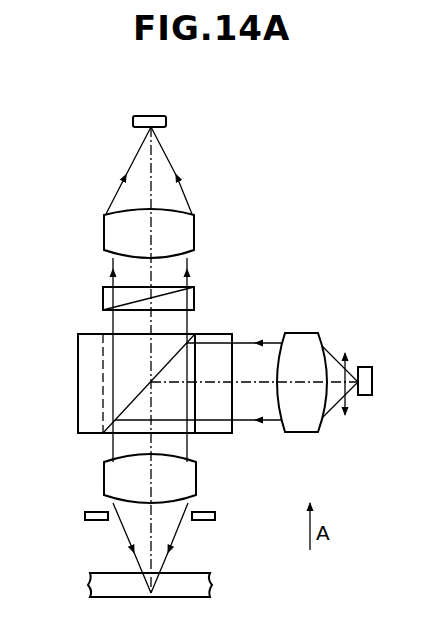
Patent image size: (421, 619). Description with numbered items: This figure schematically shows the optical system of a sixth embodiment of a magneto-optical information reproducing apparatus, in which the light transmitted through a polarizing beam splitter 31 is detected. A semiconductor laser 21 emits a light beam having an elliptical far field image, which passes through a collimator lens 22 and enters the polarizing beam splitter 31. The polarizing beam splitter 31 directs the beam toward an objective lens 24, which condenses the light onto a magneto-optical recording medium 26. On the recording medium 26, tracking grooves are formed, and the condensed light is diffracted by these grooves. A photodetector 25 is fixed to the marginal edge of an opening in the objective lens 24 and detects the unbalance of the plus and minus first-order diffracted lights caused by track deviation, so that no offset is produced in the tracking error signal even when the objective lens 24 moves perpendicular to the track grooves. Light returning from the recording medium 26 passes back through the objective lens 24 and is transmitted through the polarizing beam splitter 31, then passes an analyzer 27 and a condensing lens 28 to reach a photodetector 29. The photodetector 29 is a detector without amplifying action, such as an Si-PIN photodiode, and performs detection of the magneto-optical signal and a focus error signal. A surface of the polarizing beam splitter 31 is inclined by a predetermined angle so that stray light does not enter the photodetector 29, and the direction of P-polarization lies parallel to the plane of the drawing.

The semiconductor laser 21 is at (364, 367).
The collimator lens 22 is at (309, 333).
The objective lens 24 is at (104, 478).
The photodetector 25 is at (85, 516).
The magneto-optical recording medium 26 is at (88, 580).
The analyzer 27 is at (103, 296).
The condensing lens 28 is at (103, 235).
The photodetector 29 is at (133, 121).
The polarizing beam splitter 31 is at (226, 334).